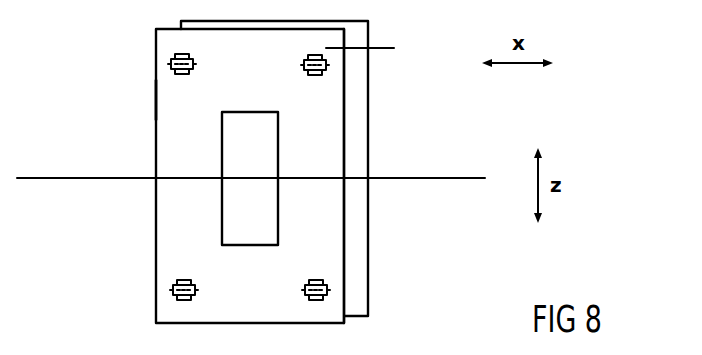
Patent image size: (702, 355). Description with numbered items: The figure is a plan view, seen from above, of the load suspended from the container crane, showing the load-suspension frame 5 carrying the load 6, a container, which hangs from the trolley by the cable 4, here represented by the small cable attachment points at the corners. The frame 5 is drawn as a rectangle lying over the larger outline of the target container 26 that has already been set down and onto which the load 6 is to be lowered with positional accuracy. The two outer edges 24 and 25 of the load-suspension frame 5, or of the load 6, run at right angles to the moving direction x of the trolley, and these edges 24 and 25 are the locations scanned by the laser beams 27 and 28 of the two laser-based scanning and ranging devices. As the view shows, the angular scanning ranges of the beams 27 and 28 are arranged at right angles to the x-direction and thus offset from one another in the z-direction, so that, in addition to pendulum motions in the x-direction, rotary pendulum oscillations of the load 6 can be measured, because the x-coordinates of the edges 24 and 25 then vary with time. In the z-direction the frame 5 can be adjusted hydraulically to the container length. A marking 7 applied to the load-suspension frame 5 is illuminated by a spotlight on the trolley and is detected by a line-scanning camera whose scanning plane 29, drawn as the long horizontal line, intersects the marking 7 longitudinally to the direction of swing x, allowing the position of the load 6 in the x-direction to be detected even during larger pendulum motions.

The cable 4 is at (167, 63).
The load-suspension frame 5 is at (177, 102).
The load 6 is at (177, 102).
The marking 7 is at (265, 206).
The outer edge 24 is at (156, 155).
The outer edge 25 is at (344, 122).
The target container 26 is at (357, 84).
The laser beam 27 is at (115, 278).
The laser beam 28 is at (382, 48).
The scanning plane 29 is at (67, 178).